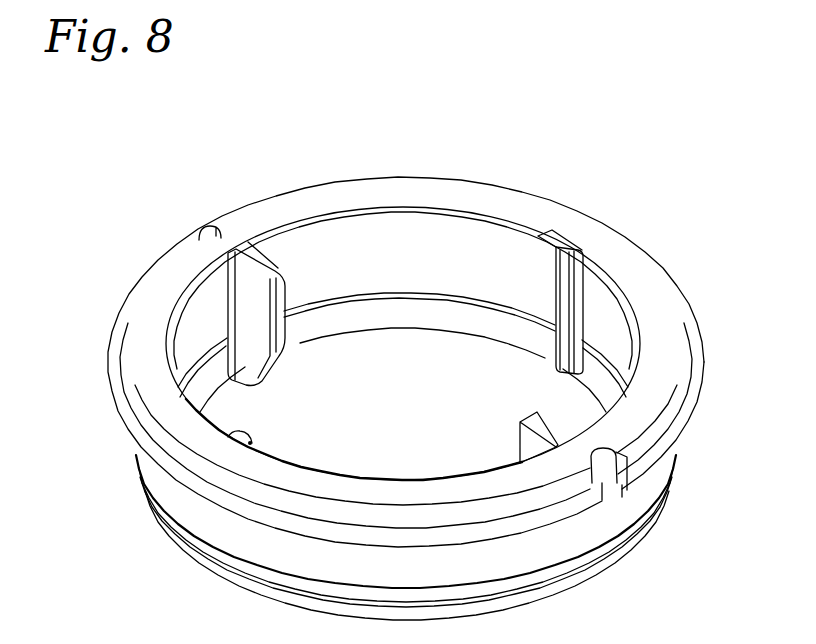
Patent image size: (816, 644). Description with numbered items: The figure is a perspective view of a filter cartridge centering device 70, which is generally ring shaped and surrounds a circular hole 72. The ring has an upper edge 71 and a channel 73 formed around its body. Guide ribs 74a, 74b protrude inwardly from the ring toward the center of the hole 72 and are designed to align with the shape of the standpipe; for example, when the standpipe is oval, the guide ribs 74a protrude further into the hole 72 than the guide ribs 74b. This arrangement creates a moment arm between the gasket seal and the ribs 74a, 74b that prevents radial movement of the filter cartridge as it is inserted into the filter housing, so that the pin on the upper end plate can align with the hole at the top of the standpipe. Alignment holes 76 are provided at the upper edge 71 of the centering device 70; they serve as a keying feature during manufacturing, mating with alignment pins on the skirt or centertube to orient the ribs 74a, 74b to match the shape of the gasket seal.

The centering device 70 is at (529, 144).
The upper edge 71 is at (378, 192).
The circular hole 72 is at (378, 458).
The channel 73 is at (618, 542).
The guide ribs 74a is at (283, 255).
The guide ribs 74b is at (538, 240).
The alignment holes 76 is at (204, 232).